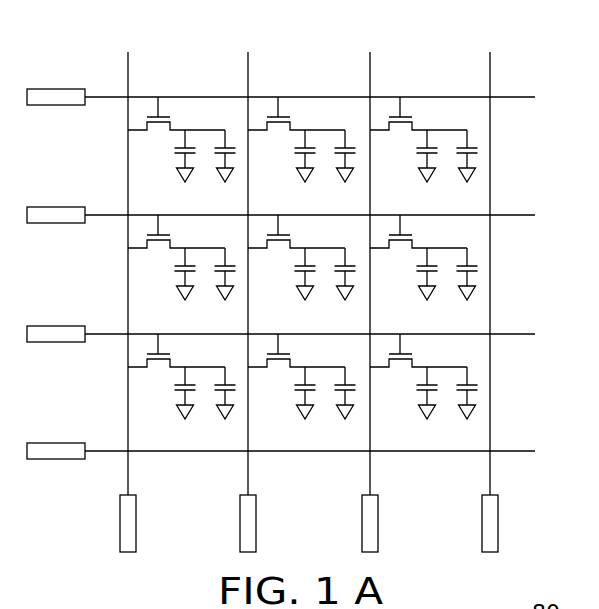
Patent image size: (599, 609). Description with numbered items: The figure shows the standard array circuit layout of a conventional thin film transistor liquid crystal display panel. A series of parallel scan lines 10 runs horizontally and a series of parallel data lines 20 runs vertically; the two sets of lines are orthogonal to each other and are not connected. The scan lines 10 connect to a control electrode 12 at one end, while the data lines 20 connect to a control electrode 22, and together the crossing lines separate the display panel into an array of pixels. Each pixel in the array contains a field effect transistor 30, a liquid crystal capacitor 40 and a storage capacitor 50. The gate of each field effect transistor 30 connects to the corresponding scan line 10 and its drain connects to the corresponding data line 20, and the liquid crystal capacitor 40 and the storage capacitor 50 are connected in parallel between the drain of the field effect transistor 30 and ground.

The scan line 10 is at (513, 96).
The control electrode 12 is at (55, 97).
The data line 20 is at (372, 75).
The control electrode 22 is at (499, 525).
The field effect transistor 30 is at (400, 222).
The liquid crystal capacitor 40 is at (414, 267).
The storage capacitor 50 is at (486, 266).